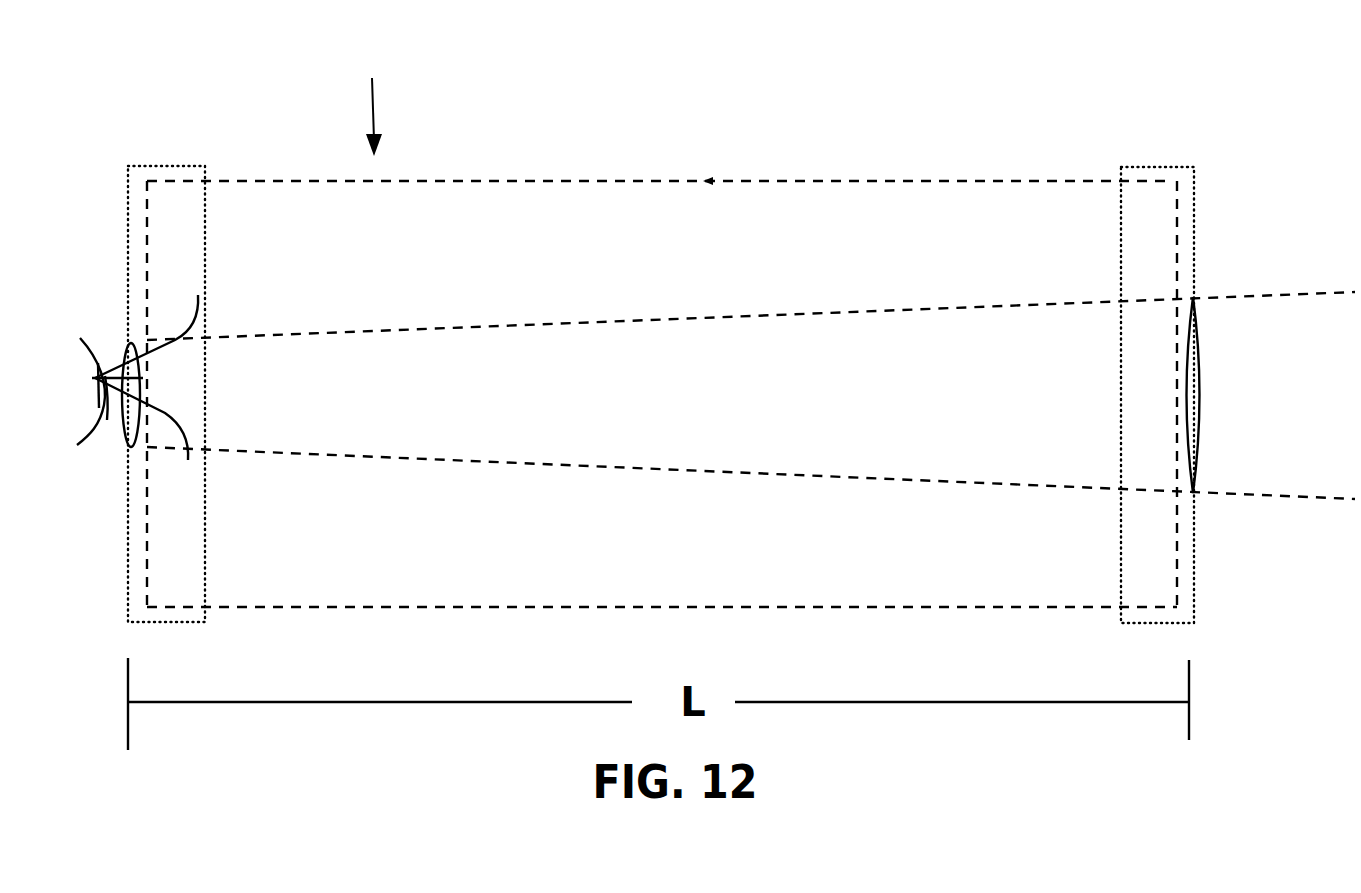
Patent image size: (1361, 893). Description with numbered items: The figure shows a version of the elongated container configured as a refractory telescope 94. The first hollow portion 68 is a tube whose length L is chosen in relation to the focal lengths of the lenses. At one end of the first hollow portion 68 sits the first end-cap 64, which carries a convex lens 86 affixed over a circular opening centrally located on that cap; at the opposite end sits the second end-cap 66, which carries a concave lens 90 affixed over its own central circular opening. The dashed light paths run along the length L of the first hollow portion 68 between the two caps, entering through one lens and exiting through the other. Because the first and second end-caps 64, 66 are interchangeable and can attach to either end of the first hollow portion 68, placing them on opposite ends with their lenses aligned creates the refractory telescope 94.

The first end-cap 64 is at (169, 236).
The second end-cap 66 is at (1158, 248).
The first hollow portion 68 is at (800, 181).
The convex lens 86 is at (122, 427).
The concave lens 90 is at (1203, 380).
The refractory telescope 94 is at (371, 94).